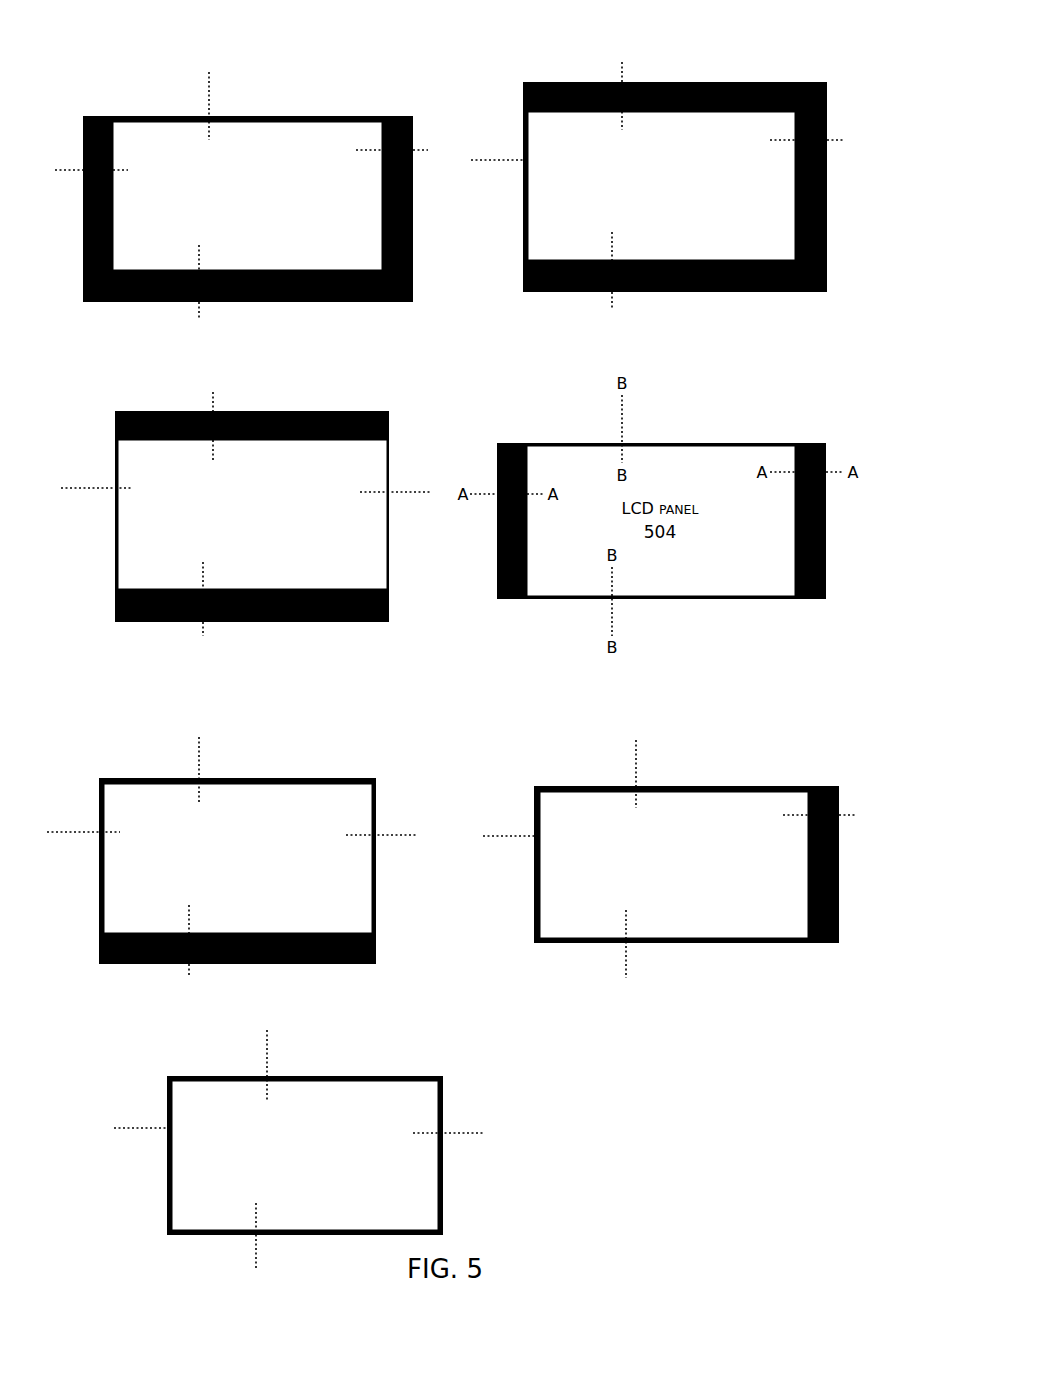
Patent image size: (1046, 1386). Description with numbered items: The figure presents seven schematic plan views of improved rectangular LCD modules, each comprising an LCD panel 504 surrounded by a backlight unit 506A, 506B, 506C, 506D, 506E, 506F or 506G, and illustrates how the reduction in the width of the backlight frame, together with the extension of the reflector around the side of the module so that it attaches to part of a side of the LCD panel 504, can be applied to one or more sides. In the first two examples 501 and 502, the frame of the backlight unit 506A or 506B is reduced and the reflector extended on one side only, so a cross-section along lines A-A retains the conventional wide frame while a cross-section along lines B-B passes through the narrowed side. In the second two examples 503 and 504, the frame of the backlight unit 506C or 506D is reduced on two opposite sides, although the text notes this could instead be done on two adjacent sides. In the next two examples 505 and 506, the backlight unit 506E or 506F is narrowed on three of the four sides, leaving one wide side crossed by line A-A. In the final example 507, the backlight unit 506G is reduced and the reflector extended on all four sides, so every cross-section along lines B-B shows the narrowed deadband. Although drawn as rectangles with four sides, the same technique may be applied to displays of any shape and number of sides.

The first example LCD module 501 is at (327, 86).
The second example LCD module 502 is at (784, 61).
The third example LCD module 503 is at (392, 379).
The LCD panel 504 is at (247, 196).
The fifth example LCD module 505 is at (396, 709).
The sixth example LCD module 506 is at (805, 749).
The seventh example LCD module 507 is at (363, 1033).
The backlight unit 506A is at (413, 215).
The backlight unit 506B is at (797, 292).
The backlight unit 506C is at (389, 420).
The backlight unit 506D is at (826, 599).
The backlight unit 506E is at (376, 946).
The backlight unit 506F is at (839, 943).
The backlight unit 506G is at (443, 1076).